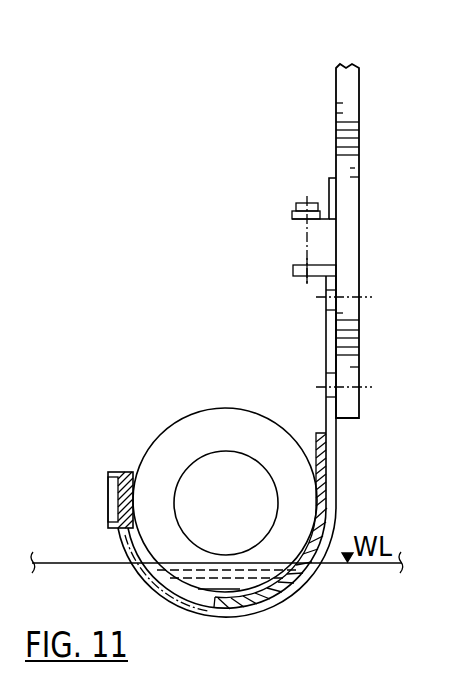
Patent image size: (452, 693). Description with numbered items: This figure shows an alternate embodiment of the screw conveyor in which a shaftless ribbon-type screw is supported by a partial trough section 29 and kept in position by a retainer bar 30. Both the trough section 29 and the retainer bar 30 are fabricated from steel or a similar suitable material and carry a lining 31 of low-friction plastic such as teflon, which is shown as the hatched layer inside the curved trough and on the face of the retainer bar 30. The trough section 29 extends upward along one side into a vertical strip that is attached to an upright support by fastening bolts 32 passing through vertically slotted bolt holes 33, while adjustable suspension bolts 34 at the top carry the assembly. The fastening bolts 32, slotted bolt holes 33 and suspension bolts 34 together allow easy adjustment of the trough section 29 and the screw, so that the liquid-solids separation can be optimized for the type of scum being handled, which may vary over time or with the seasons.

The trough section 29 is at (291, 596).
The retainer bar 30 is at (104, 488).
The lining 31 is at (125, 472).
The fastening bolts 32 is at (372, 288).
The vertically slotted bolt holes 33 is at (320, 304).
The adjustable suspension bolts 34 is at (298, 242).